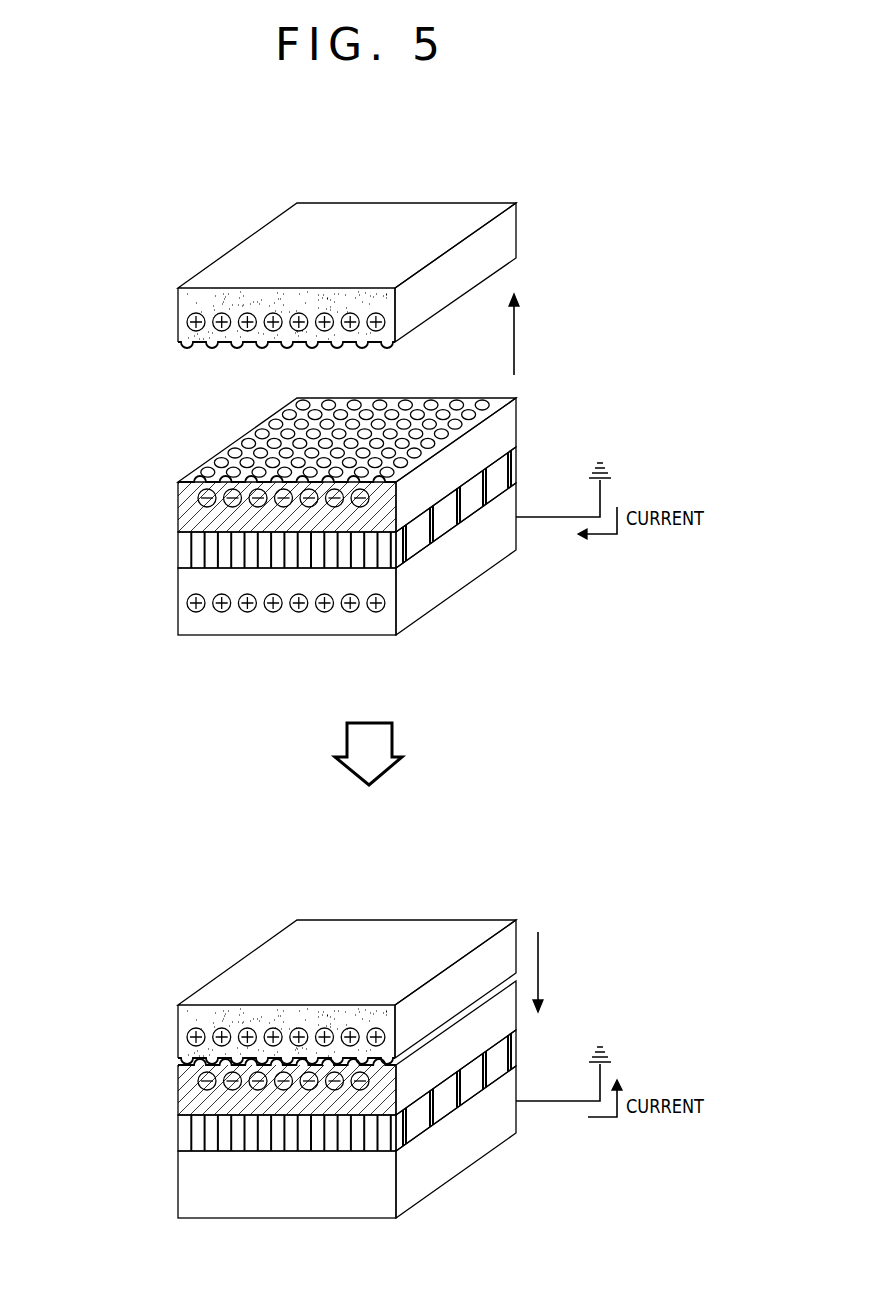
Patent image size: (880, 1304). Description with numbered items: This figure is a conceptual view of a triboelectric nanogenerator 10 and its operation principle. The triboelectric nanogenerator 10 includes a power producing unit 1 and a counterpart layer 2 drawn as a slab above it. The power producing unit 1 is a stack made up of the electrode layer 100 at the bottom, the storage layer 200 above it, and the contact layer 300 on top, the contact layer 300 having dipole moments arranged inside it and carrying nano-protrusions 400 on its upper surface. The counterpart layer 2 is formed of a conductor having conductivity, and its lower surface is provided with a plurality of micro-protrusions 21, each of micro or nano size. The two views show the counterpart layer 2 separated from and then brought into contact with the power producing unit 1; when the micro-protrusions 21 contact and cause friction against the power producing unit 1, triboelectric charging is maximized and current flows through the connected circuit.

The power producing unit 1 is at (287, 808).
The triboelectric nanogenerator 10 is at (309, 604).
The counterpart layer 2 is at (378, 228).
The micro-protrusions 21 is at (183, 341).
The electrode layer 100 is at (303, 850).
The storage layer 200 is at (178, 551).
The contact layer 300 is at (178, 507).
The nano-protrusions 400 is at (210, 470).